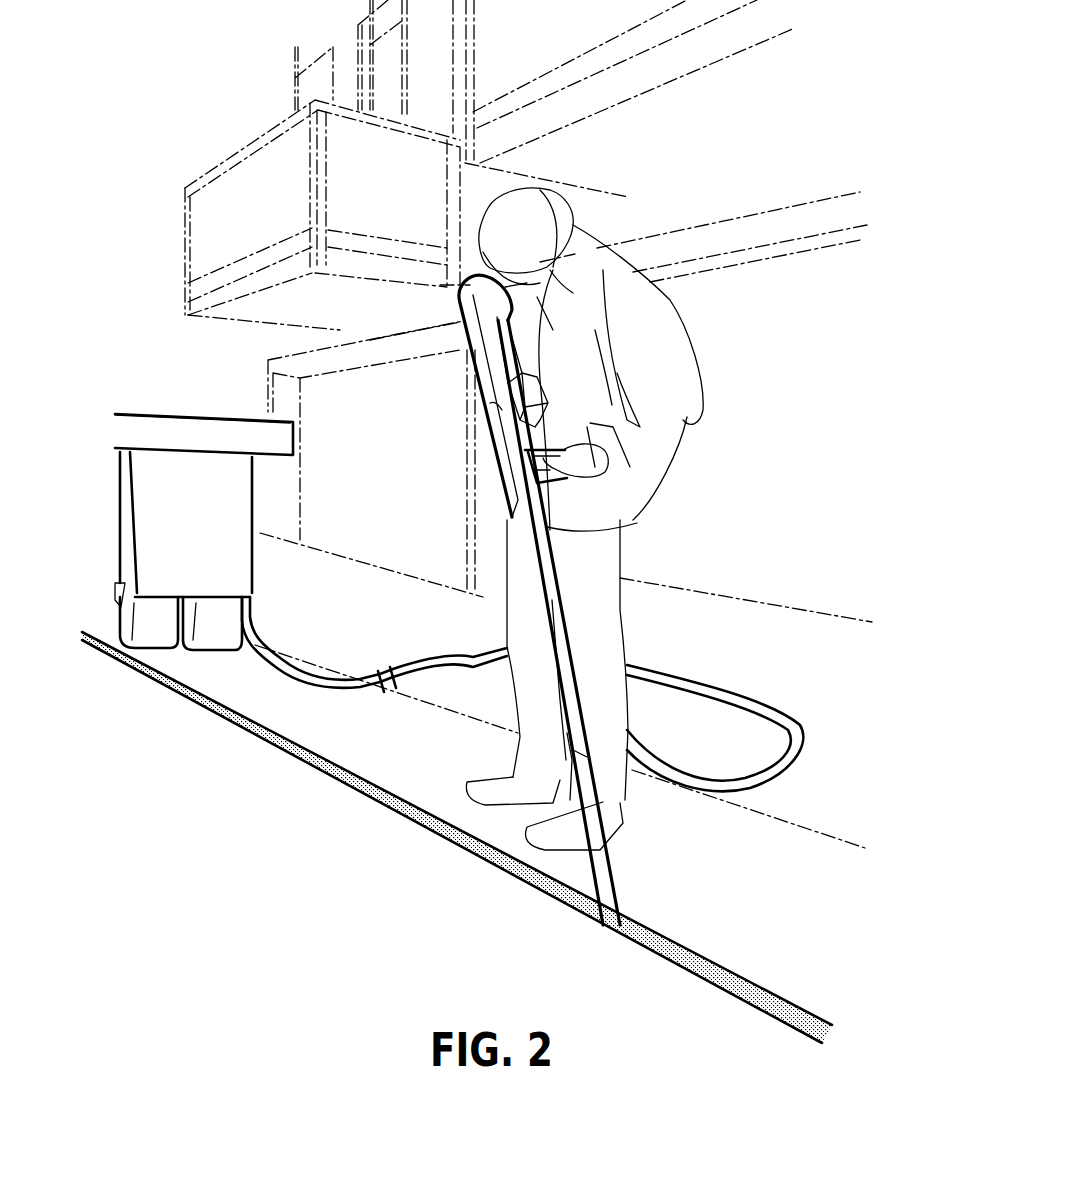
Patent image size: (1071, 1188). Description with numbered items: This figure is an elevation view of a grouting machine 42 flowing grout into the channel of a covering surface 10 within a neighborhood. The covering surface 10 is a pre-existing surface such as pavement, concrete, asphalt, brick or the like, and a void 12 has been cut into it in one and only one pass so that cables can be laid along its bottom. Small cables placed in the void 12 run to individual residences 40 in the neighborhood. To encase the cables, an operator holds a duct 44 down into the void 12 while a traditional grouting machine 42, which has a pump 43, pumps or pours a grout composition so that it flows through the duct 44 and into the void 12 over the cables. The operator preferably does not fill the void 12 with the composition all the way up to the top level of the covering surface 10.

The covering surface 10 is at (262, 872).
The void 12 is at (752, 987).
The residences 40 is at (808, 223).
The grouting machine 42 is at (113, 549).
The pump 43 is at (197, 528).
The duct 44 is at (605, 872).